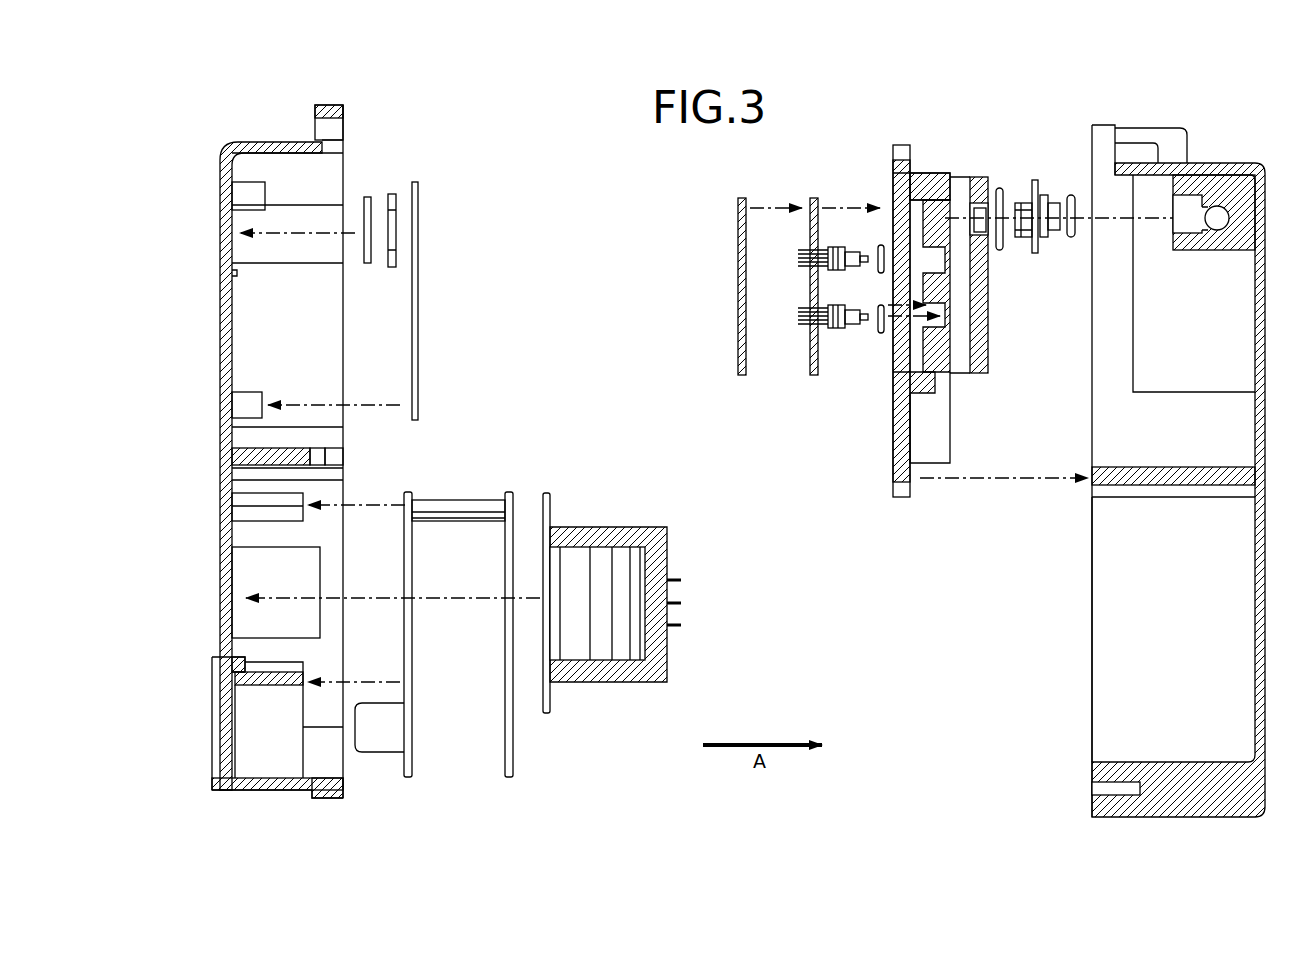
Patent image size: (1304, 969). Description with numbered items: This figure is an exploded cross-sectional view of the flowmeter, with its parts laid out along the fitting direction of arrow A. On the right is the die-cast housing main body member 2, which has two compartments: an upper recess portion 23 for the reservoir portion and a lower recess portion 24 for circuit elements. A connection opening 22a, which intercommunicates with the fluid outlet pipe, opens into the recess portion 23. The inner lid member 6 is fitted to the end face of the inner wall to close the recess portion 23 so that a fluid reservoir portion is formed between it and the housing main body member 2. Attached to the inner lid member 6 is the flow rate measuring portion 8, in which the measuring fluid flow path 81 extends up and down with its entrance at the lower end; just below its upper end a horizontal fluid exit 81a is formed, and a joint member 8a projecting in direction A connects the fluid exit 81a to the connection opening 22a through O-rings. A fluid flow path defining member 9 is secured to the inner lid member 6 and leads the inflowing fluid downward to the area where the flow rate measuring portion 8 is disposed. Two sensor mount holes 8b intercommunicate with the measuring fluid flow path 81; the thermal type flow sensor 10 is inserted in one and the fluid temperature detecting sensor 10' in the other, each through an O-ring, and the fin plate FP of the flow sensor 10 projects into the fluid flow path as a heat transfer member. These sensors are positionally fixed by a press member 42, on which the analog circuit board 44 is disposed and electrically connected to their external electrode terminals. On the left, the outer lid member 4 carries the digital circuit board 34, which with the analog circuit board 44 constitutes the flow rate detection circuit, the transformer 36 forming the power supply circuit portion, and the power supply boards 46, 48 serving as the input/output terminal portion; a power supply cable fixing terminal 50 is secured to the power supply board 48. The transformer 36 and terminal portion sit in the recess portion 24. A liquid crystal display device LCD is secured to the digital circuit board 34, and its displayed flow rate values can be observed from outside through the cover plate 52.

The housing main body member 2 is at (1208, 817).
The outer lid member 4 is at (278, 790).
The inner lid member 6 is at (907, 145).
The flow rate measuring portion 8 is at (937, 182).
The joint member 8a is at (1021, 205).
The sensor mount hole 8b is at (936, 325).
The fluid flow path defining member 9 is at (950, 455).
The thermal type flow sensor 10 is at (833, 333).
The fluid temperature detecting sensor 10' is at (833, 221).
The connection opening 22a is at (1178, 228).
The recess portion for reservoir portion 23 is at (1120, 423).
The recess portion for circuit elements 24 is at (1120, 661).
The digital circuit board 34 is at (418, 324).
The transformer 36 is at (595, 652).
The press member 42 is at (810, 196).
The analog circuit board 44 is at (742, 196).
The power supply board 46 is at (513, 770).
The power supply board 48 is at (411, 768).
The power supply cable fixing terminal 50 is at (366, 740).
The cover plate 52 is at (370, 194).
The measuring fluid flow path 81 is at (975, 352).
The fluid exit 81a is at (990, 228).
The liquid crystal display device LCD is at (393, 270).
The fin plate FP is at (866, 322).